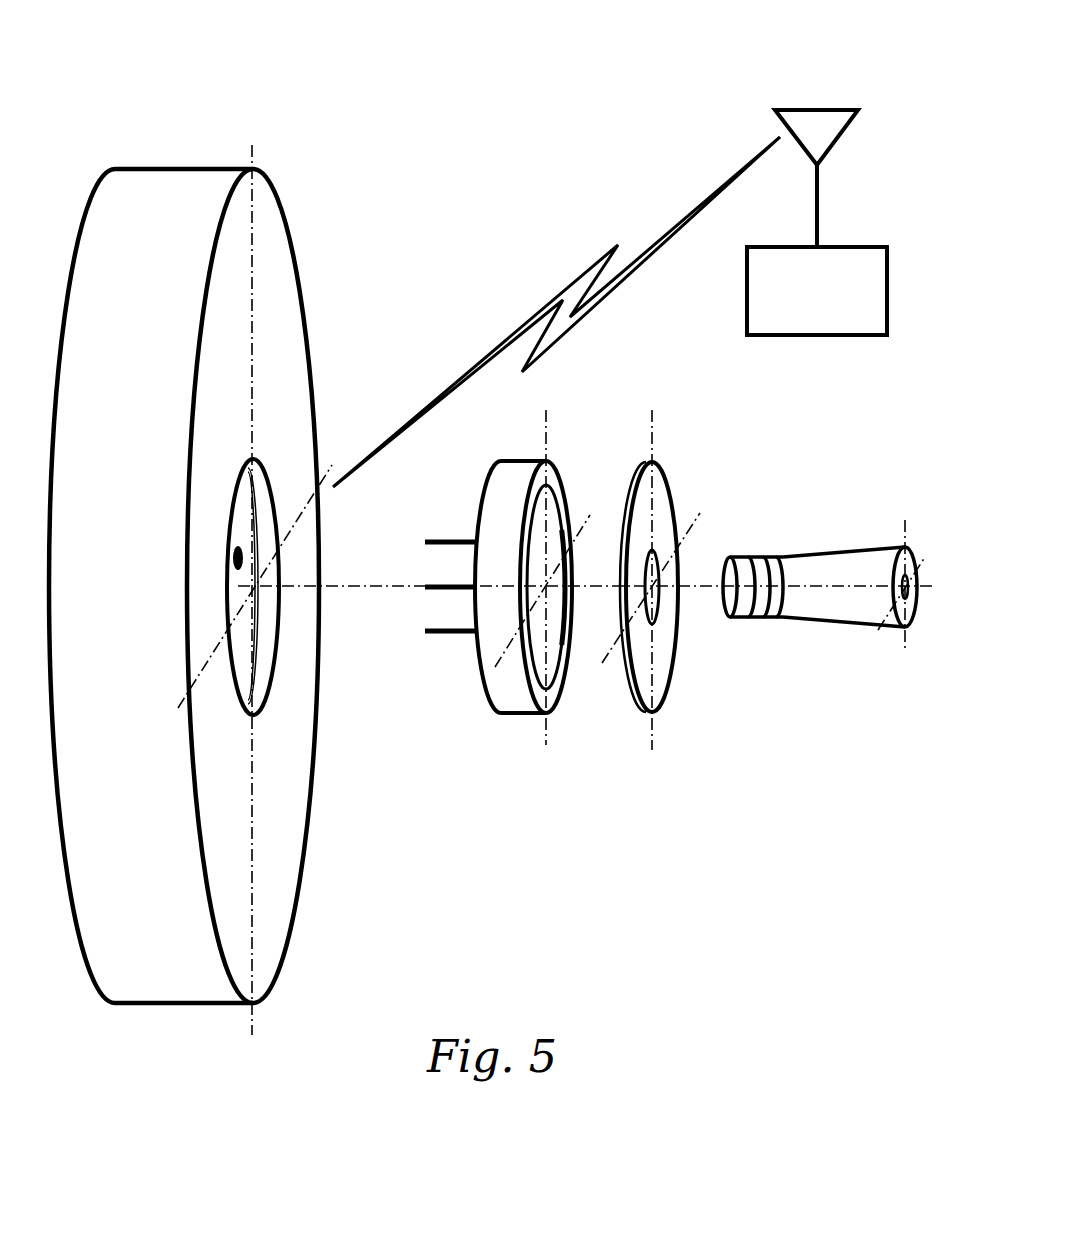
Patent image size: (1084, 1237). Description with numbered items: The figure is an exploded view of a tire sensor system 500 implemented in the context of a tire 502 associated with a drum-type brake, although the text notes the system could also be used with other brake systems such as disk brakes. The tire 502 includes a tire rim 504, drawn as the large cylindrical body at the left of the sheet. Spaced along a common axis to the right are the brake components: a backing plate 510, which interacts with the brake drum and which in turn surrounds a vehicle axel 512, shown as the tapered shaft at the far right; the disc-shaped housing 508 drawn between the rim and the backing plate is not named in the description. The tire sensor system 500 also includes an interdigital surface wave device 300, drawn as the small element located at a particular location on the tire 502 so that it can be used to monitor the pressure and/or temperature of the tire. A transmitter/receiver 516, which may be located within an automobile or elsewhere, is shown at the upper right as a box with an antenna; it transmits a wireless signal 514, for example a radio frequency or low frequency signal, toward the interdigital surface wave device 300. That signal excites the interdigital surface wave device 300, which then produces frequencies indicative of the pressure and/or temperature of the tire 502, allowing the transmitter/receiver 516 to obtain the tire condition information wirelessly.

The tire sensor system 500 is at (831, 62).
The tire 502 is at (270, 212).
The tire rim 504 is at (322, 821).
The interdigital surface wave device 300 is at (234, 560).
The detector 508 is at (469, 688).
The backing plate 510 is at (632, 689).
The vehicle axel 512 is at (845, 628).
The wireless signal 514 is at (524, 321).
The transmitter/receiver 516 is at (837, 313).